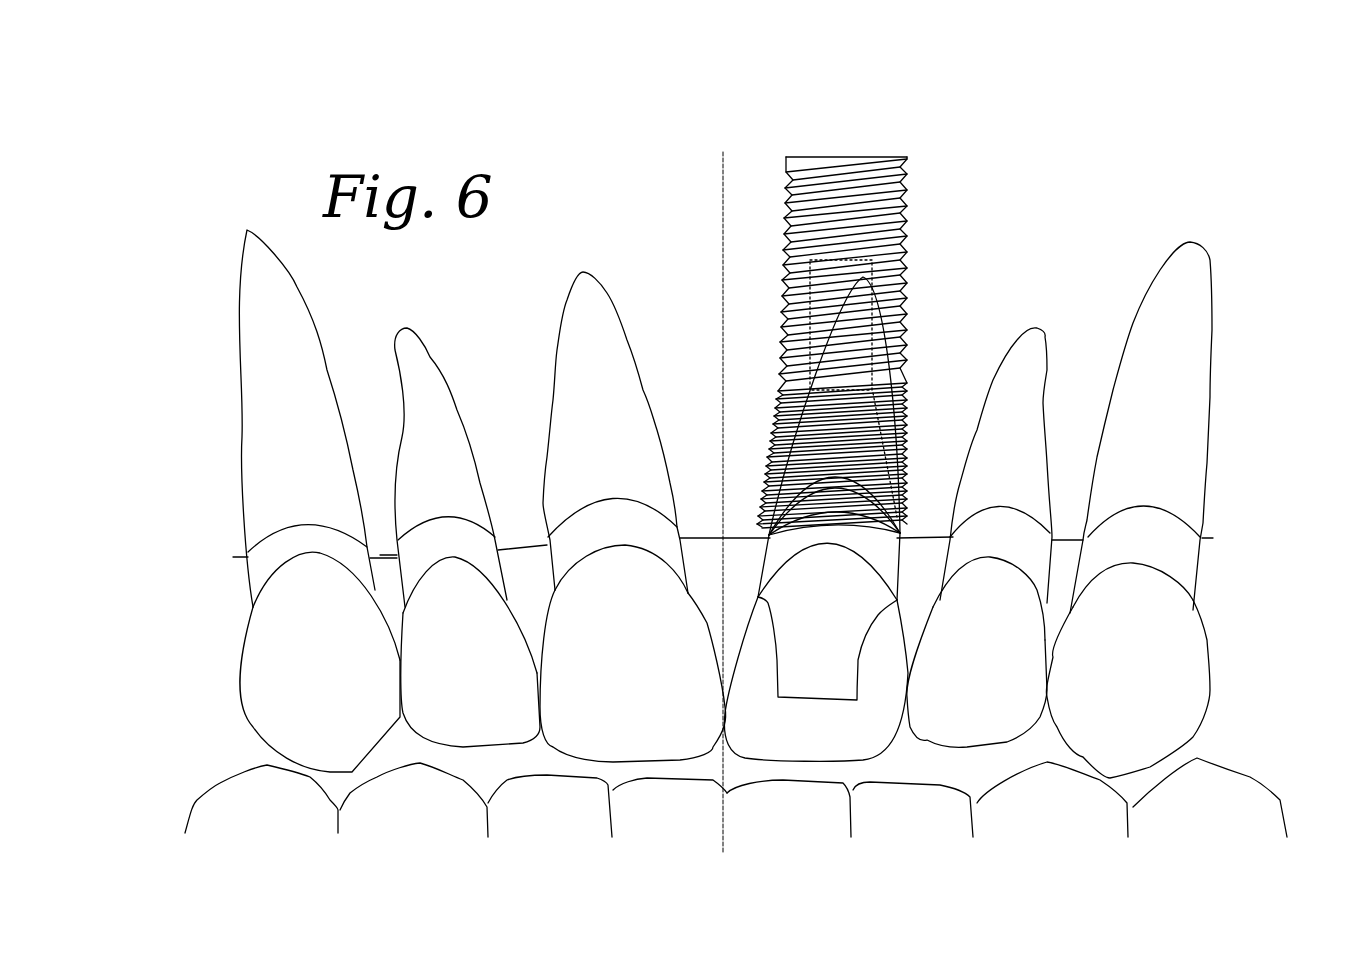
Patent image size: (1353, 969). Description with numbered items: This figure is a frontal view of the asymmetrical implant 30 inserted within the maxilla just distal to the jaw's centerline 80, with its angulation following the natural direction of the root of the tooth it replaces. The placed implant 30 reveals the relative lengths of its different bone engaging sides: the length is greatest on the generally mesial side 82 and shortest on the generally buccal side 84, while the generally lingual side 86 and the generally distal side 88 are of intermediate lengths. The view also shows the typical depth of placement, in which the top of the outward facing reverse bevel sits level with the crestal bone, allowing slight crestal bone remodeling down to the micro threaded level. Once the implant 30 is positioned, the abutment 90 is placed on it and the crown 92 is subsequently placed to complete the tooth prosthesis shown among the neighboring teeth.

The implant 30 is at (882, 240).
The jaw's centerline 80 is at (722, 172).
The mesial side 82 is at (784, 141).
The buccal side 84 is at (847, 118).
The lingual side 86 is at (843, 96).
The distal side 88 is at (907, 141).
The abutment 90 is at (850, 583).
The crown 92 is at (862, 738).